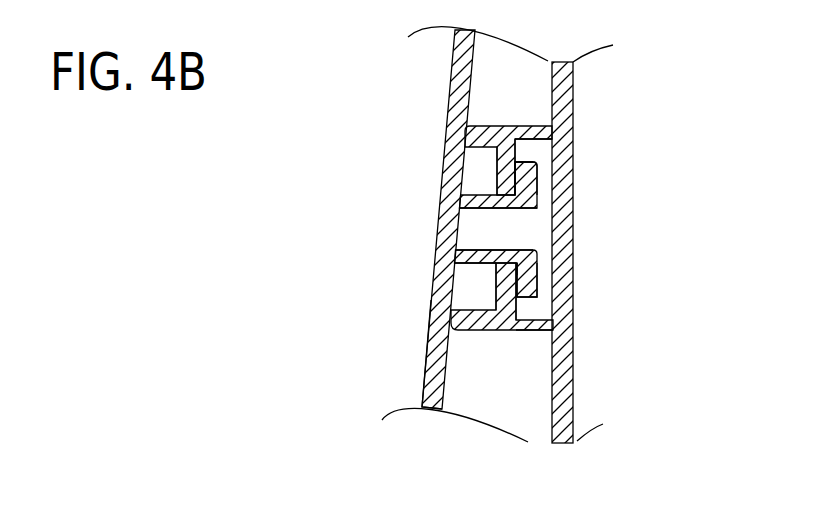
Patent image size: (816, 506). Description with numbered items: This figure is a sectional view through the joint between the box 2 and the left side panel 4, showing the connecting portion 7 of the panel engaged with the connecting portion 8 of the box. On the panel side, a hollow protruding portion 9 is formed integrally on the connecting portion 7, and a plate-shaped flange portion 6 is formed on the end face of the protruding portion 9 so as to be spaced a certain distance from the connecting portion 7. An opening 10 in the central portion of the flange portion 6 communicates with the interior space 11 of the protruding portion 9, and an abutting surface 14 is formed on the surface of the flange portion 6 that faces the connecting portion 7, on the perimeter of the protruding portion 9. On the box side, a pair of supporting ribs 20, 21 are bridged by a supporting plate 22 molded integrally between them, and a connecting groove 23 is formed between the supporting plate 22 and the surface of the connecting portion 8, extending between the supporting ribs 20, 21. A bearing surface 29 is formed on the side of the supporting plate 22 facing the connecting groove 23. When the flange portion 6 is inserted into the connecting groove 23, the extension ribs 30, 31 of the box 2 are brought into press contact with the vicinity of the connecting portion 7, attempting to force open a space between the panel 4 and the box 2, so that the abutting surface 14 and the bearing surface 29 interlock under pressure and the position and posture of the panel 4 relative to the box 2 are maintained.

The box 2 is at (575, 152).
The left side panel 4 is at (445, 217).
The flange portion 6 is at (516, 182).
The connecting portion 7 is at (446, 378).
The connecting portion 8 is at (524, 334).
The protruding portion 9 is at (483, 265).
The opening 10 is at (533, 232).
The interior space 11 is at (490, 236).
The abutting surface 14 is at (512, 179).
The supporting rib 20 is at (513, 123).
The supporting rib 21 is at (503, 331).
The supporting plate 22 is at (500, 160).
The connecting groove 23 is at (535, 153).
The bearing surface 29 is at (517, 171).
The extension rib 30 is at (468, 121).
The extension rib 31 is at (464, 331).